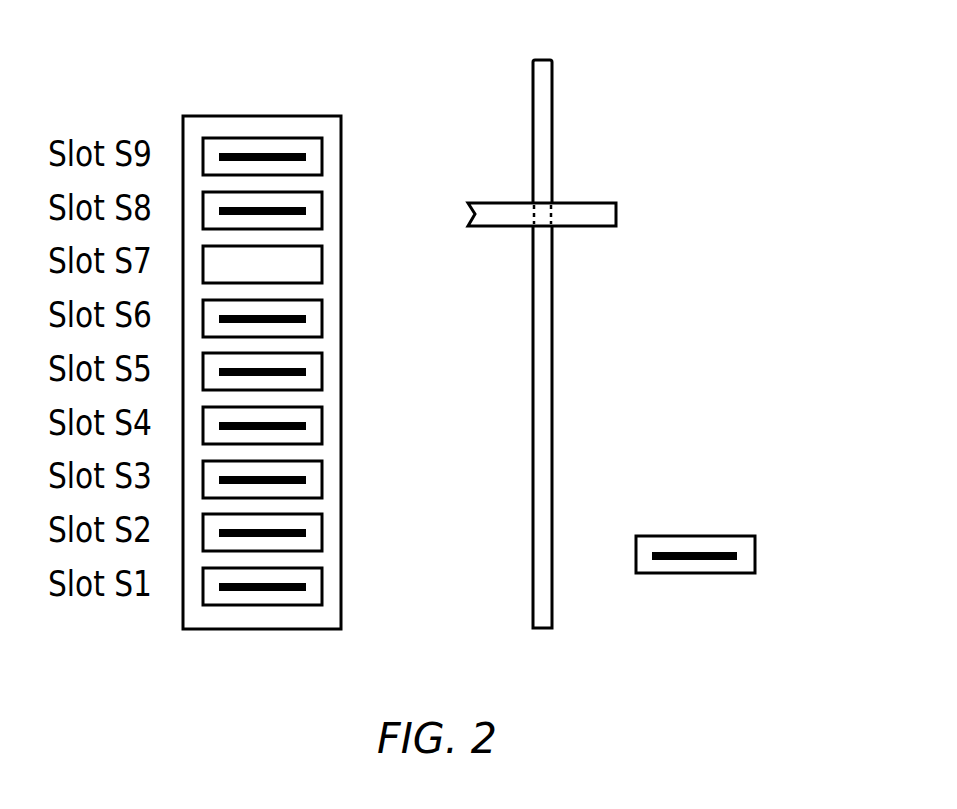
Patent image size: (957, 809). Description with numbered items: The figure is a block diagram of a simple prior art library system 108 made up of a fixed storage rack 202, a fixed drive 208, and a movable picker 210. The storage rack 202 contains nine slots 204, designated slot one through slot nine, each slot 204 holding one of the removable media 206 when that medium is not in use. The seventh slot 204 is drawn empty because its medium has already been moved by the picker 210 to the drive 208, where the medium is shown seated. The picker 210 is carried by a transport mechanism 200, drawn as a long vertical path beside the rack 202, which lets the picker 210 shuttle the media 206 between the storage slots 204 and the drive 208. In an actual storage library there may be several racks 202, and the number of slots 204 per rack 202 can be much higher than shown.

The library system 108 is at (825, 123).
The transport mechanism 200 is at (553, 394).
The storage rack 202 is at (262, 127).
The slot 204 is at (323, 157).
The removable media 206 is at (315, 283).
The drive 208 is at (756, 553).
The picker 210 is at (617, 212).